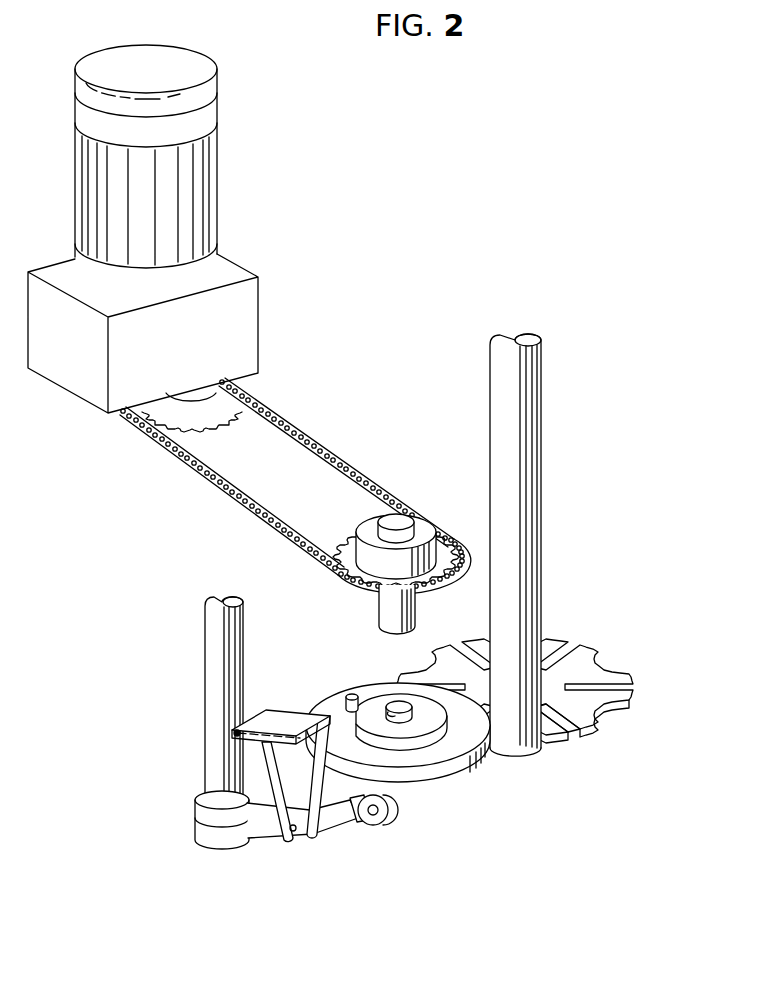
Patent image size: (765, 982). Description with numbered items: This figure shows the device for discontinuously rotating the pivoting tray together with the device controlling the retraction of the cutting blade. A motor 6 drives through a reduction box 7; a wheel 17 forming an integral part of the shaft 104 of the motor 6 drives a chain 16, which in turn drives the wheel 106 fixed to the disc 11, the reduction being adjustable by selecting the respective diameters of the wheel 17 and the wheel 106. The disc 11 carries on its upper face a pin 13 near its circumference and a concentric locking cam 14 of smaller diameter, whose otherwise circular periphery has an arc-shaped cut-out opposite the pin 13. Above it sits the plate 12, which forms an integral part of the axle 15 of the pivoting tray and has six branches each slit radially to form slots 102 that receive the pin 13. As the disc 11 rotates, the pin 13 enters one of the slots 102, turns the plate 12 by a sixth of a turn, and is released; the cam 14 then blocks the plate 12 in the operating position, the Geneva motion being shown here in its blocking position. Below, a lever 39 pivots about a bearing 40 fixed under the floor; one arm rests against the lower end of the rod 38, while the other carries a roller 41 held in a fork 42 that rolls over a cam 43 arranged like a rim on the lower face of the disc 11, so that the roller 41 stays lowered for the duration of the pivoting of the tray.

The motor 6 is at (197, 178).
The box 7 is at (240, 312).
The shaft 104 is at (192, 400).
The wheel 17 is at (207, 423).
The chain 16 is at (327, 454).
The wheel 106 is at (295, 506).
The axle 15 is at (533, 492).
The plate 12 is at (582, 672).
The slots 102 is at (569, 731).
The disc 11 is at (410, 758).
The locking cam 14 is at (382, 728).
The pin 13 is at (348, 695).
The rod 38 is at (222, 670).
The lever 39 is at (265, 826).
The bearing 40 is at (277, 714).
The roller 41 is at (386, 826).
The fork 42 is at (358, 816).
The cam 43 is at (333, 812).